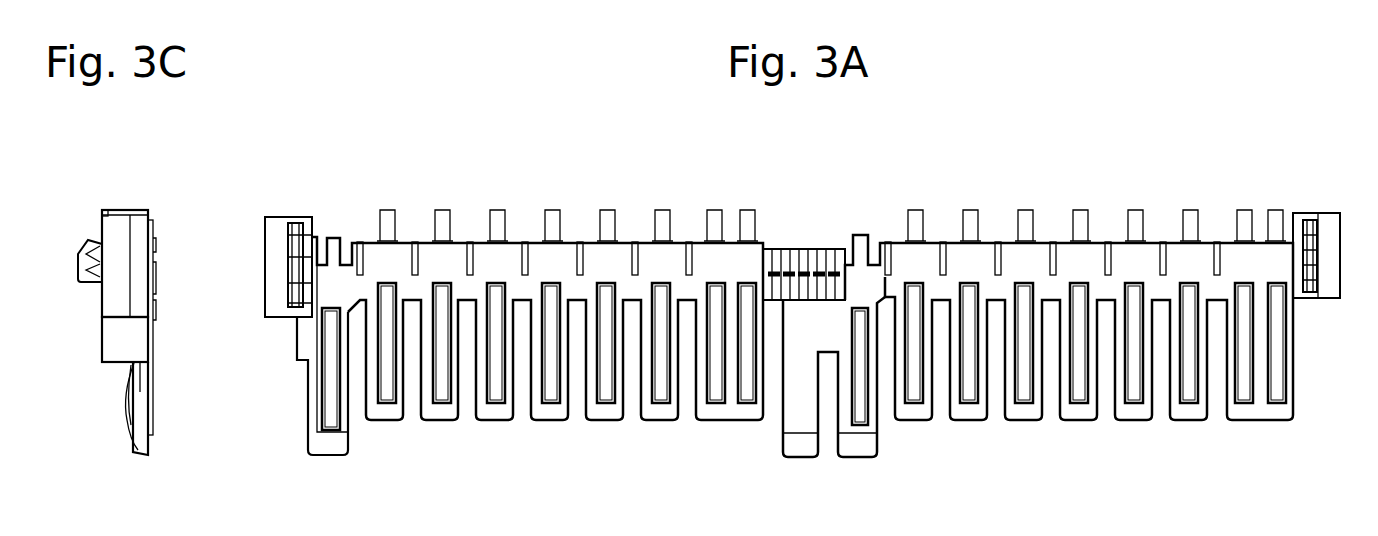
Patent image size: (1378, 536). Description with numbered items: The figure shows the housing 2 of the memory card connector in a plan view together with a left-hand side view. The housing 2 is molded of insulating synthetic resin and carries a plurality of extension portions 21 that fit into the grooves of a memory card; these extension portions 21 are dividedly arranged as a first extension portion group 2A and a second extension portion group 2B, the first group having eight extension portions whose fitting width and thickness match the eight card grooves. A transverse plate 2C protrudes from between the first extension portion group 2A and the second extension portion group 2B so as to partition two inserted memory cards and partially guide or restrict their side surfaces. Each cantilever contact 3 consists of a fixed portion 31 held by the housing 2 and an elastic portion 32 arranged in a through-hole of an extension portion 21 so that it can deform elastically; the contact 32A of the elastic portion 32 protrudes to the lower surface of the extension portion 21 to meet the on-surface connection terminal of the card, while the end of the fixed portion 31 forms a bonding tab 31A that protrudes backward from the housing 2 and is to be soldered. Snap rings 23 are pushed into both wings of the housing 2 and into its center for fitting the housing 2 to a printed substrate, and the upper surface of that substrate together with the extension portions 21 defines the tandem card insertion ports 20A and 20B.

In FIG. 3A, the housing 2 is at (826, 238).
In FIG. 3A, the first extension portion group 2A is at (768, 348).
In FIG. 3A, the second extension portion group 2B is at (1075, 368).
In FIG. 3A, the transverse plate 2C is at (826, 462).
In FIG. 3A, the cantilever contact 3 is at (330, 362).
In FIG. 3C, the card insertion port 20A is at (87, 322).
In FIG. 3A, the card insertion port 20A is at (530, 423).
In FIG. 3C, the card insertion port 20B is at (112, 380).
In FIG. 3A, the card insertion port 20B is at (1312, 460).
In FIG. 3C, the extension portion 21 is at (143, 457).
In FIG. 3C, the snap ring 23 is at (86, 238).
In FIG. 3A, the snap ring 23 is at (292, 260).
In FIG. 3A, the fixed portion 31 is at (333, 240).
In FIG. 3A, the bonding tab 31A is at (390, 213).
In FIG. 3A, the elastic portion 32 is at (295, 376).
In FIG. 3C, the contact 32A is at (127, 398).